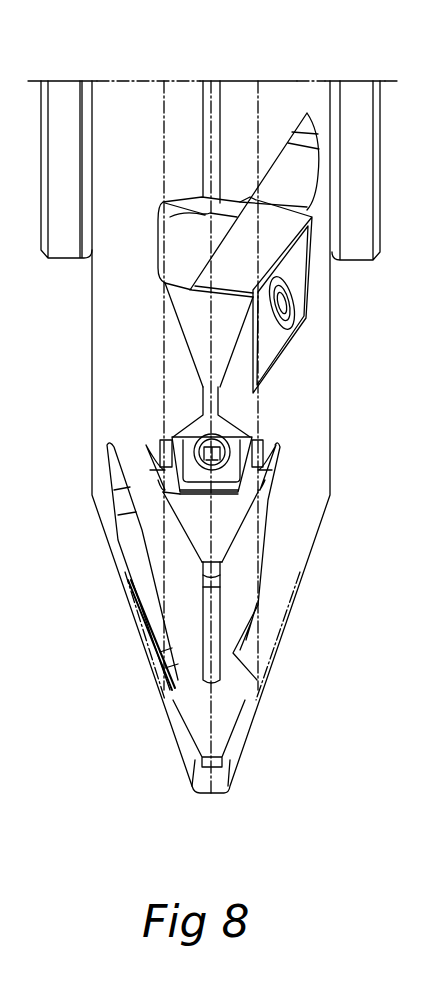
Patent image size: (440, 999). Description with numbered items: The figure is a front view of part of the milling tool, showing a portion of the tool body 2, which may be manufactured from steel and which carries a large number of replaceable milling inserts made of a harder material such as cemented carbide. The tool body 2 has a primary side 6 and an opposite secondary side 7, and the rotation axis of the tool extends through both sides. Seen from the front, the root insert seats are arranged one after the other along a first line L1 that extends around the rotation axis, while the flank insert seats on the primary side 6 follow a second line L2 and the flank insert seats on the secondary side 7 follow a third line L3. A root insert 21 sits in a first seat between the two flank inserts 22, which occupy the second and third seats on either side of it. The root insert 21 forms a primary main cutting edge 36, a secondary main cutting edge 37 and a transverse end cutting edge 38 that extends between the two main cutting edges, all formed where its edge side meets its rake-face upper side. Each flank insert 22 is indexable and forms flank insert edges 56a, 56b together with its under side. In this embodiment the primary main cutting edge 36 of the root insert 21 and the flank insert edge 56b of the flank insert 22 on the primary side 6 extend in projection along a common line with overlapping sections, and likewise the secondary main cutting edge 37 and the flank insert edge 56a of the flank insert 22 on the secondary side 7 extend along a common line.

The tool body 2 is at (310, 95).
The primary side 6 is at (125, 372).
The secondary side 7 is at (303, 413).
The root insert 21 is at (233, 503).
The flank insert 22 is at (290, 320).
The primary main cutting edge 36 is at (188, 551).
The secondary main cutting edge 37 is at (235, 532).
The transverse end cutting edge 38 is at (220, 580).
The flank insert edge 56a is at (290, 256).
The flank insert edge 56b is at (150, 637).
The first line L1 is at (212, 127).
The second line L2 is at (163, 103).
The third line L3 is at (258, 150).